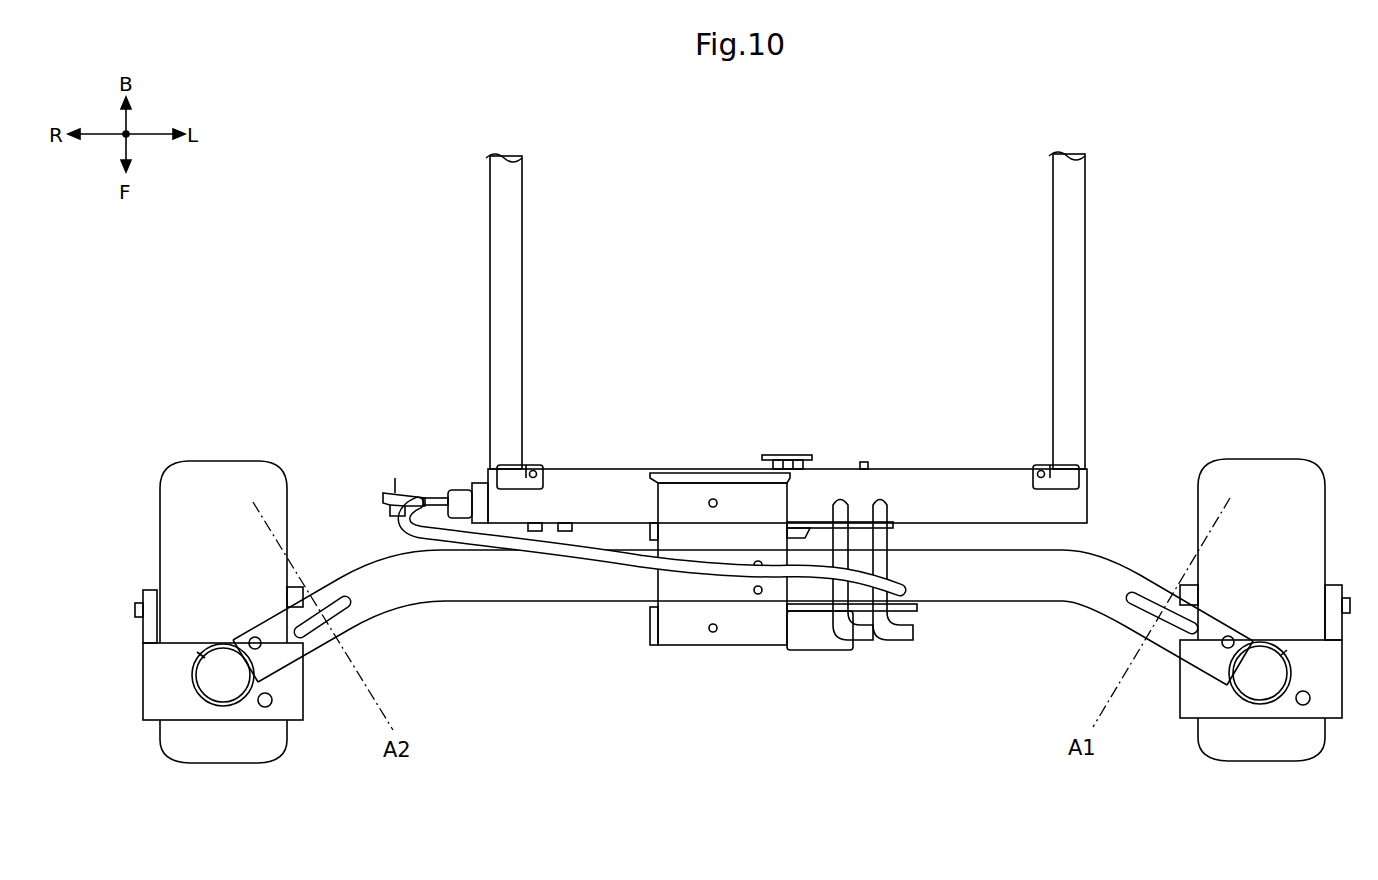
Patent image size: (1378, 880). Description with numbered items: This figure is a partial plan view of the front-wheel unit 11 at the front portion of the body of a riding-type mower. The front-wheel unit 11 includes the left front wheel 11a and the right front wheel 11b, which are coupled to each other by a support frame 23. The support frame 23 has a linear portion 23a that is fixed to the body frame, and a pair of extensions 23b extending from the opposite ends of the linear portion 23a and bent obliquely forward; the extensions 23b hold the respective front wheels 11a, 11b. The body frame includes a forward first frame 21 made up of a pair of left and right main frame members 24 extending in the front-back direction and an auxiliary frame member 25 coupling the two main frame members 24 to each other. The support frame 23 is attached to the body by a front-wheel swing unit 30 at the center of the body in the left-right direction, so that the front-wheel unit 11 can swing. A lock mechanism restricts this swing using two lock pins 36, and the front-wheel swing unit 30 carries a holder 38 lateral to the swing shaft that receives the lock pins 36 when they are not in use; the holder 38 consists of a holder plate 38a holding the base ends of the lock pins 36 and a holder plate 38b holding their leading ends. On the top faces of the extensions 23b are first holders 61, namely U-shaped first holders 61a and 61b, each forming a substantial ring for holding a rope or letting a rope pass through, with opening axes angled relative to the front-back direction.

The front-wheel unit 11 is at (742, 568).
The left front wheel 11a is at (1307, 476).
The right front wheel 11b is at (177, 478).
The first frame 21 is at (782, 341).
The support frame 23 is at (742, 615).
The linear portion 23a is at (568, 603).
The extension 23b is at (743, 600).
The main frame member 24 is at (500, 267).
The auxiliary frame member 25 is at (598, 478).
The front-wheel swing unit 30 is at (692, 650).
The lock pin 36 is at (845, 556).
The holder 38 is at (880, 553).
The holder plate 38a is at (917, 610).
The holder plate 38b is at (893, 528).
The first holder 61 is at (746, 555).
The first holder 61a is at (1152, 553).
The first holder 61b is at (317, 595).